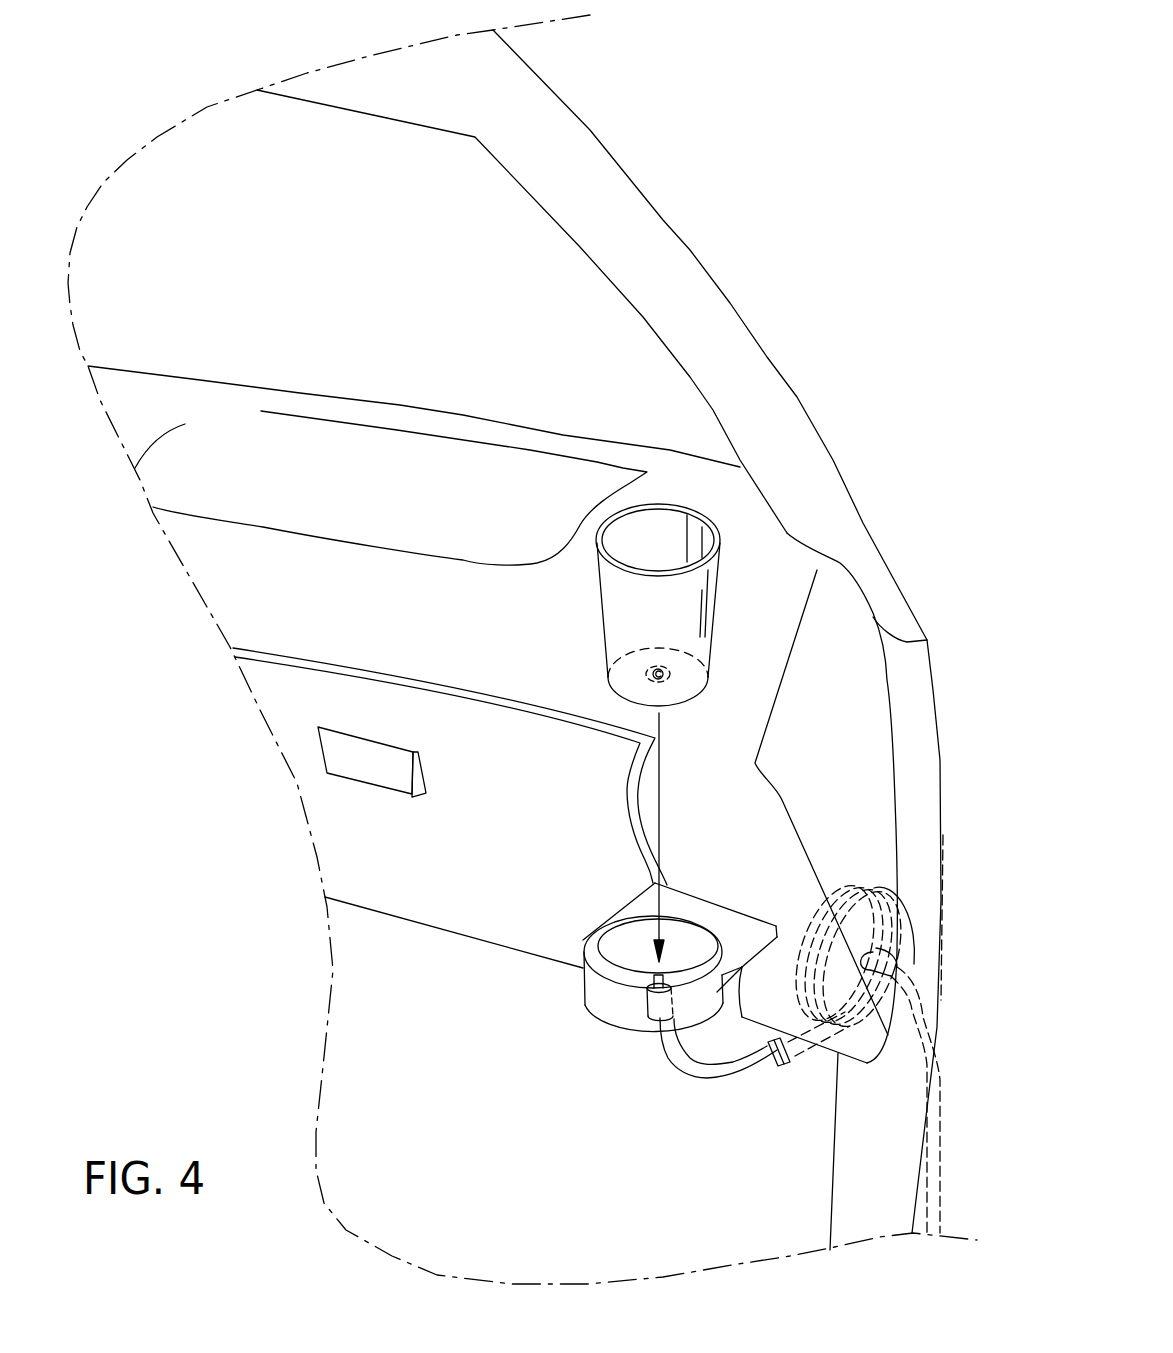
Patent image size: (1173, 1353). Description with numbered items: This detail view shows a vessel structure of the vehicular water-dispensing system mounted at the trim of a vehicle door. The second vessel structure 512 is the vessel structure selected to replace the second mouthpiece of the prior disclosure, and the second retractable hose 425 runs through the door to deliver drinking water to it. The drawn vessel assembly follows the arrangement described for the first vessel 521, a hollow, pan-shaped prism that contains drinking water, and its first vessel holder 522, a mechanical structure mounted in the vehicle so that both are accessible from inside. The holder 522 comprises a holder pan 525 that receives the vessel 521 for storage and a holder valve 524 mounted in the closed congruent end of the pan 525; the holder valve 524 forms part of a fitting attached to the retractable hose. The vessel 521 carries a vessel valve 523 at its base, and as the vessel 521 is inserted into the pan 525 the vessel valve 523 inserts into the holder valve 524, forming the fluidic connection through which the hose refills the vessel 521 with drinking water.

The second vessel structure 512 is at (907, 430).
The first vessel 521 is at (717, 607).
The first vessel valve 523 is at (667, 670).
The first vessel holder 522 is at (745, 925).
The first vessel holder valve 524 is at (660, 970).
The first vessel holder pan 525 is at (617, 948).
The second retractable hose 425 is at (717, 1081).